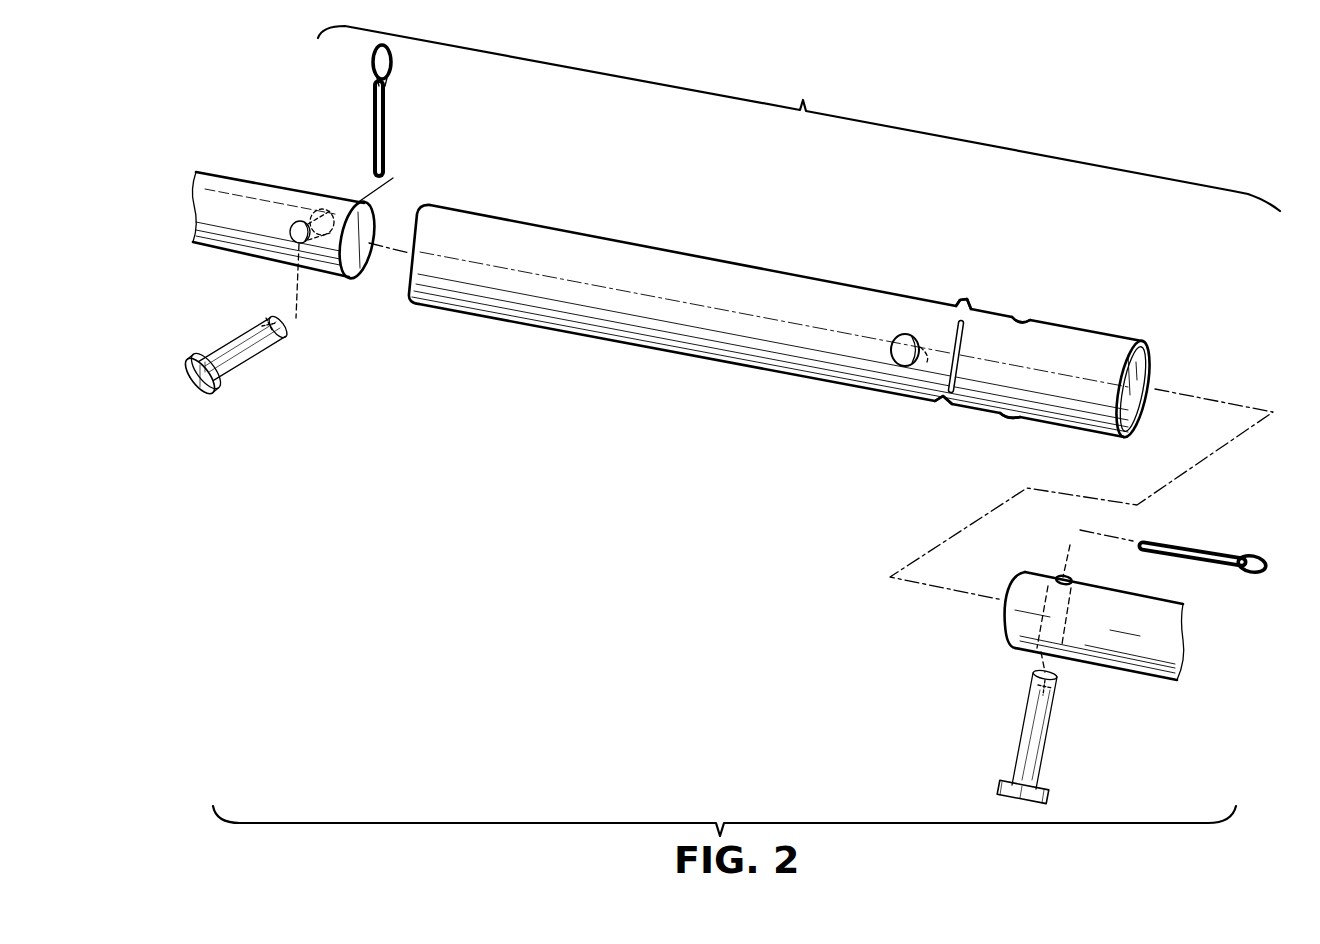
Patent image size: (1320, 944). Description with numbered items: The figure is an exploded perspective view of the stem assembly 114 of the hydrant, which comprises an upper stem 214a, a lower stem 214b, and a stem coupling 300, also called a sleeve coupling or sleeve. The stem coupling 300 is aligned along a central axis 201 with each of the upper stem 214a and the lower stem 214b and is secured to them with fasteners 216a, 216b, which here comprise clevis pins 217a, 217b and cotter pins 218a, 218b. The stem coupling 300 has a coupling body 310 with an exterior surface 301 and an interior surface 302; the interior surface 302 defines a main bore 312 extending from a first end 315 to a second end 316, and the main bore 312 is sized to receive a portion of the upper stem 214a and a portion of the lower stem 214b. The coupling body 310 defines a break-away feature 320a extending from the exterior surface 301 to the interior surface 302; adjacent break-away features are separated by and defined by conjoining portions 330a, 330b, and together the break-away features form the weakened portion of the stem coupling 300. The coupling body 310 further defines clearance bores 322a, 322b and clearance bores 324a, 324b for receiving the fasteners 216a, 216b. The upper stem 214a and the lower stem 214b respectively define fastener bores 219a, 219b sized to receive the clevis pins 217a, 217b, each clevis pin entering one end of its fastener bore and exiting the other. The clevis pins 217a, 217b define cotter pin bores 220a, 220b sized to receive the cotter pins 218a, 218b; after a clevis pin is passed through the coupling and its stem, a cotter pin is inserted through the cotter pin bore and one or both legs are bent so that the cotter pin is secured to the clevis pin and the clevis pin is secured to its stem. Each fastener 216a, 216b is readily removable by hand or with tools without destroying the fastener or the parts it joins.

The stem assembly 114 is at (746, 431).
The central axis 201 is at (1207, 398).
The upper stem 214a is at (1102, 651).
The lower stem 214b is at (293, 219).
The fastener 216a is at (1019, 742).
The fastener 216b is at (227, 344).
The clevis pin 217a is at (1020, 750).
The clevis pin 217b is at (237, 377).
The cotter pin 218a is at (1220, 547).
The cotter pin 218b is at (373, 80).
The fastener bore 219a is at (1117, 566).
The fastener bore 219b is at (341, 236).
The cotter pin bore 220a is at (1043, 693).
The cotter pin bore 220b is at (215, 345).
The stem coupling 300 is at (761, 319).
The exterior surface 301 is at (553, 308).
The interior surface 302 is at (1150, 405).
The coupling body 310 is at (712, 343).
The main bore 312 is at (1153, 377).
The first end 315 is at (1133, 436).
The second end 316 is at (403, 262).
The break-away feature 320a is at (960, 347).
The clearance bore 322a is at (1023, 317).
The clearance bore 322b is at (1013, 417).
The clearance bore 324a is at (903, 333).
The clearance bore 324b is at (927, 357).
The conjoining portion 330a is at (946, 400).
The conjoining portion 330b is at (963, 313).